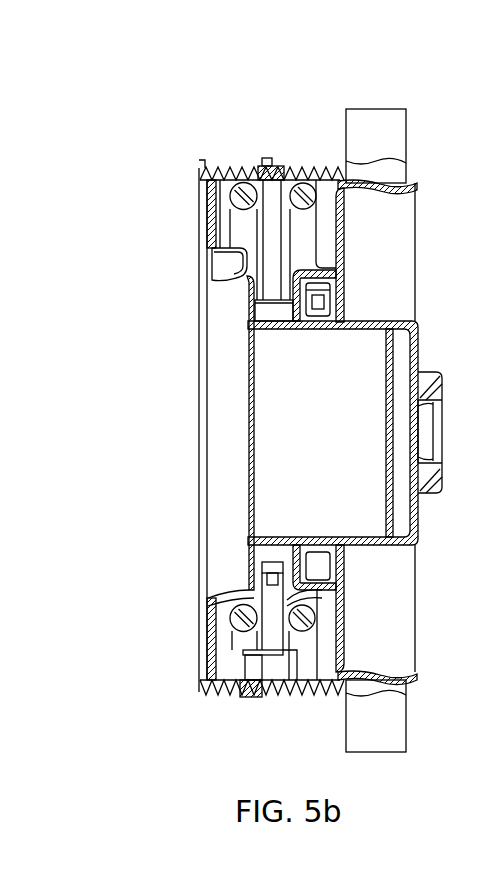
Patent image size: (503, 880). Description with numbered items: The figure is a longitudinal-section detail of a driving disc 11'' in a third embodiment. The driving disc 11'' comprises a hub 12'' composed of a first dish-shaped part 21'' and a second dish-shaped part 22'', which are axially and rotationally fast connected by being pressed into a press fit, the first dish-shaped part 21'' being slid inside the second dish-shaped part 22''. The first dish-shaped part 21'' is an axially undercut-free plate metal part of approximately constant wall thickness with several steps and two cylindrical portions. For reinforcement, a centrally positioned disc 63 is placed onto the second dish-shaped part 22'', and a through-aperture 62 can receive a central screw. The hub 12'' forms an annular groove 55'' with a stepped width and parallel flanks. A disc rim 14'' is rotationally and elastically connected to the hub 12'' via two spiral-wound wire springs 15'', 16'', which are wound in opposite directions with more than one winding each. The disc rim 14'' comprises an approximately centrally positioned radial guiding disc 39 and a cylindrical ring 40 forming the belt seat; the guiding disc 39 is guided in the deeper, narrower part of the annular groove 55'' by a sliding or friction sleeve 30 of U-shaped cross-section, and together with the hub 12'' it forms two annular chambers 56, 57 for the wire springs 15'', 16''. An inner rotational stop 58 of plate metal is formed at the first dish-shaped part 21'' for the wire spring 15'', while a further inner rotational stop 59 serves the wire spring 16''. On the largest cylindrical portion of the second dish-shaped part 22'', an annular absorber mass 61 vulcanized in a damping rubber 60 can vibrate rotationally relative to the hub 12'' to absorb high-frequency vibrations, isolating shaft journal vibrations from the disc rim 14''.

The driving disc 11'' is at (450, 359).
The hub 12'' is at (365, 433).
The disc rim 14'' is at (263, 151).
The wire spring 15'' is at (257, 682).
The wire spring 16'' is at (272, 667).
The first dish-shaped part 21'' is at (184, 430).
The second dish-shaped part 22'' is at (369, 430).
The sliding or friction sleeve 30 is at (253, 312).
The radial guiding disc 39 is at (272, 240).
The cylindrical ring 40 is at (263, 166).
The annular groove 55'' is at (297, 167).
The annular chamber 56 is at (225, 663).
The annular chamber 57 is at (290, 663).
The inner rotational stop 58 is at (218, 270).
The inner rotational stop 59 is at (323, 281).
The damping rubber 60 is at (398, 176).
The annular absorber mass 61 is at (378, 122).
The through-aperture 62 is at (420, 440).
The disc 63 is at (440, 381).